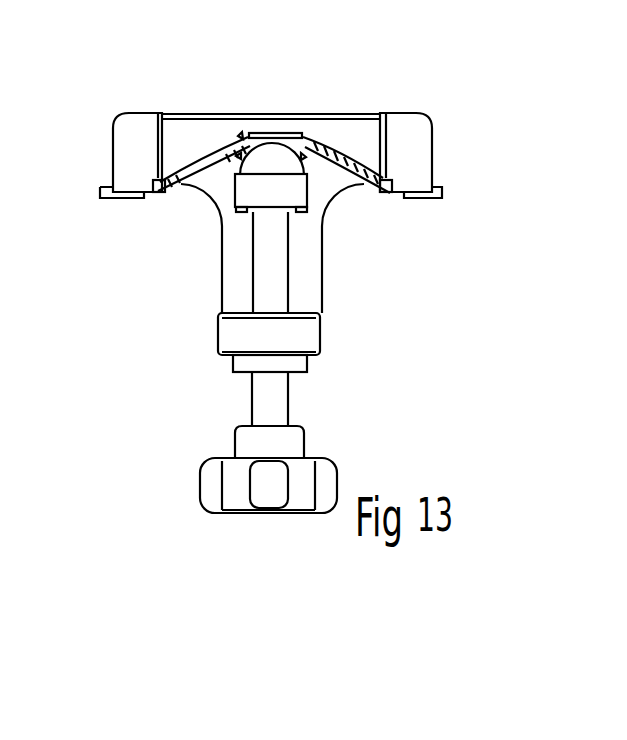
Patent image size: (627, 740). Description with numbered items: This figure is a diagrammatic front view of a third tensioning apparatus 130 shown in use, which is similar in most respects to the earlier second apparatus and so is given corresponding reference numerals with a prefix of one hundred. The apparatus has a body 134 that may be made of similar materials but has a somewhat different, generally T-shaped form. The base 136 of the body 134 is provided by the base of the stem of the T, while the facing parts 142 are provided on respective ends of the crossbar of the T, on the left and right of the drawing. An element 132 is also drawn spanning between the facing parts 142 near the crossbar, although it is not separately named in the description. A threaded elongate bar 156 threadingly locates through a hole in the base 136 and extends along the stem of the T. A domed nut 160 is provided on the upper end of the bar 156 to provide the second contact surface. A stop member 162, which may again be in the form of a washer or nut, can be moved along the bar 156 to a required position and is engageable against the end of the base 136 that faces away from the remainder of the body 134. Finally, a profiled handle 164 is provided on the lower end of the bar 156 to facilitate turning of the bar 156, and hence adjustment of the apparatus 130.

The third tensioning apparatus 130 is at (498, 80).
The curved band / spring strip 132 is at (204, 158).
The body 134 is at (302, 262).
The base 136 is at (293, 335).
The facing parts 142 is at (121, 147).
The threaded elongate bar 156 is at (268, 253).
The domed nut 160 is at (272, 165).
The stop member 162 is at (288, 367).
The profiled handle 164 is at (300, 480).